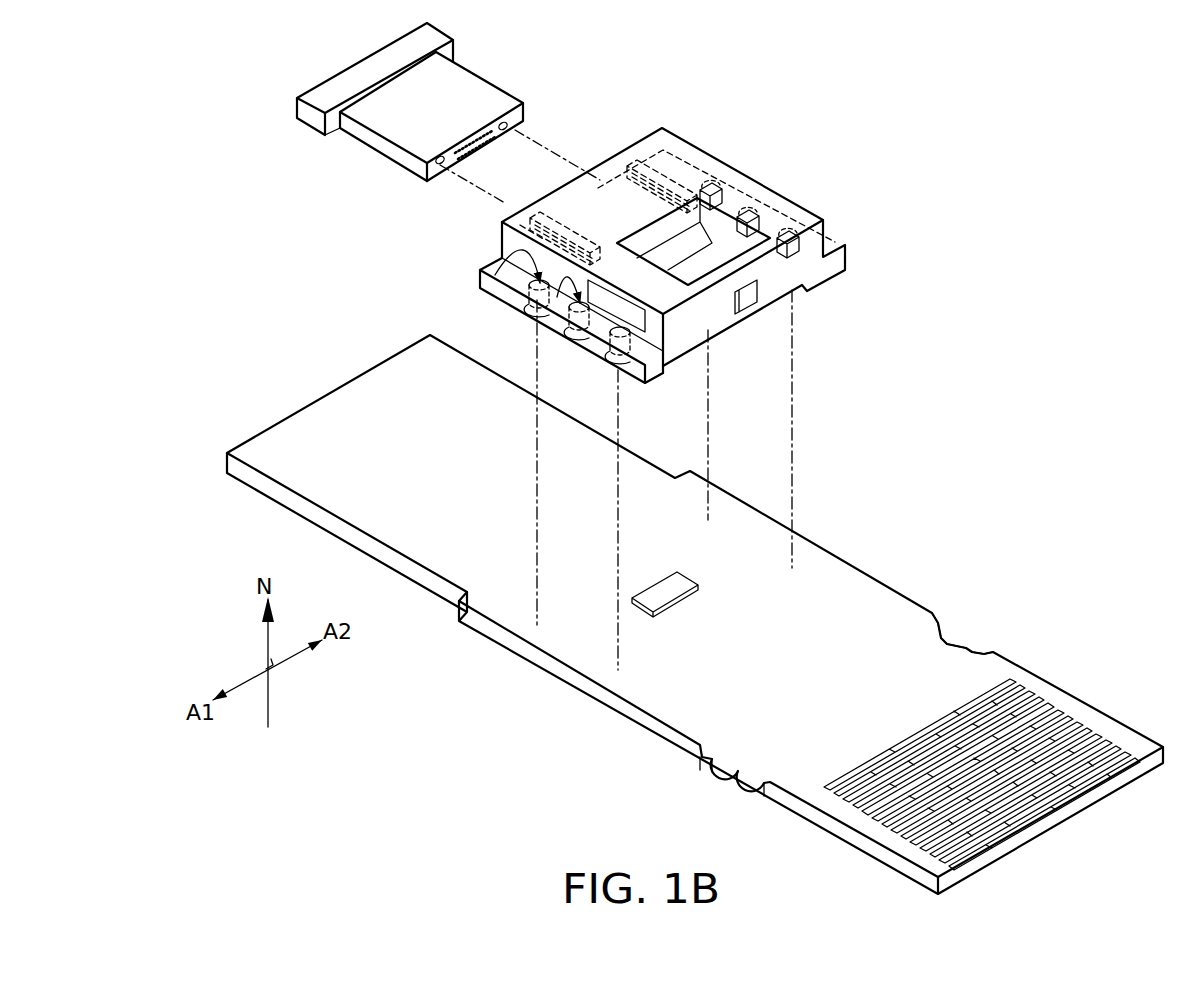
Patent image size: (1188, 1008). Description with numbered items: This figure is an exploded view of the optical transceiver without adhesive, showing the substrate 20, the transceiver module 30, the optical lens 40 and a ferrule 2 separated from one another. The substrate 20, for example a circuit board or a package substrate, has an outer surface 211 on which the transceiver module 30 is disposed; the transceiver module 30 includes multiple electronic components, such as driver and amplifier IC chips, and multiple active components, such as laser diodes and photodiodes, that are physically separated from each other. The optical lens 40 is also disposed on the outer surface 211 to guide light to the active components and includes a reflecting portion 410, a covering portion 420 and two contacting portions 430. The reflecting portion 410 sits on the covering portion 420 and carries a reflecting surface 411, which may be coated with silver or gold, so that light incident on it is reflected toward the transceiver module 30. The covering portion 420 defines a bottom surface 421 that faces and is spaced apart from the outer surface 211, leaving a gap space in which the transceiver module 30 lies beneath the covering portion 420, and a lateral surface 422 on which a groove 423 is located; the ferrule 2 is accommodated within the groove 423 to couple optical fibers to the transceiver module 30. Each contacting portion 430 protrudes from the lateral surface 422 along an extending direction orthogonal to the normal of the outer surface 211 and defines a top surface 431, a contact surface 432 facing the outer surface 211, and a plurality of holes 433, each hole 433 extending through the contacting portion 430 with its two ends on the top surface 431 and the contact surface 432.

The ferrule 2 is at (512, 78).
The substrate 20 is at (695, 614).
The transceiver module 30 is at (677, 585).
The optical lens 40 is at (708, 260).
The outer surface 211 is at (905, 683).
The reflecting portion 410 is at (720, 232).
The reflecting surface 411 is at (672, 253).
The covering portion 420 is at (667, 172).
The bottom surface 421 is at (757, 305).
The lateral surface 422 is at (517, 245).
The groove 423 is at (642, 165).
The contacting portion 430 is at (850, 240).
The top surface 431 is at (828, 247).
The contact surface 432 is at (830, 273).
The hole 433 is at (520, 345).